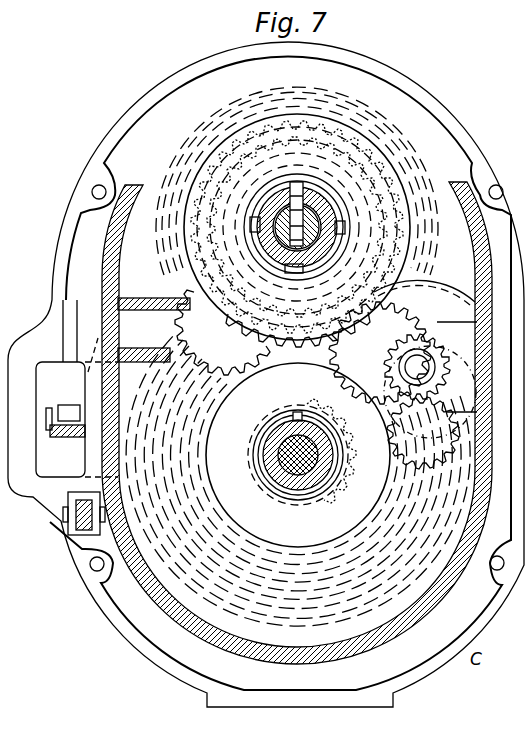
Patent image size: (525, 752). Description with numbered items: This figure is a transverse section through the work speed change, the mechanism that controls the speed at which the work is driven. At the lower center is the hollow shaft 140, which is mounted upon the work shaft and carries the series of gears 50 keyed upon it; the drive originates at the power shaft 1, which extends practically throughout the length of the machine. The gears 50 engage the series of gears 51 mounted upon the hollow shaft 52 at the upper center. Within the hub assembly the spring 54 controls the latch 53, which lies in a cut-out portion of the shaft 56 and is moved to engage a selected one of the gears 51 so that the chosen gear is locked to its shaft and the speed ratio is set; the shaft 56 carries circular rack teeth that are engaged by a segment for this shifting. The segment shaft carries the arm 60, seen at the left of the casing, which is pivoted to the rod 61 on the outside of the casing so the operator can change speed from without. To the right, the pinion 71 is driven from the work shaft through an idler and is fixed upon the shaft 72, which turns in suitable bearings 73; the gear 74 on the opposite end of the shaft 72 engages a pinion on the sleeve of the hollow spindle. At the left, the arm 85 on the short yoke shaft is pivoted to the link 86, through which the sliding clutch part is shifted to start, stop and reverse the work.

The shaft 1 is at (262, 461).
The series of gears 50 is at (346, 602).
The series of gears 51 is at (372, 150).
The hollow shaft 52 is at (300, 246).
The latch 53 is at (300, 185).
The spring 54 is at (262, 252).
The shaft 56 is at (252, 230).
The arm 60 is at (37, 391).
The rod 61 is at (55, 431).
The pinion 71 is at (395, 330).
The shaft 72 is at (420, 362).
The bearings 73 is at (460, 409).
The gear 74 is at (440, 282).
The arm 85 is at (84, 455).
The link 86 is at (76, 530).
The hollow shaft 140 is at (312, 490).